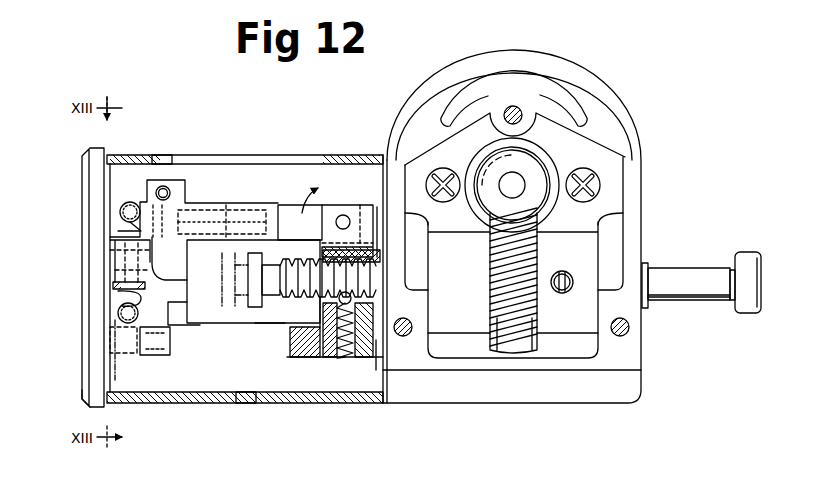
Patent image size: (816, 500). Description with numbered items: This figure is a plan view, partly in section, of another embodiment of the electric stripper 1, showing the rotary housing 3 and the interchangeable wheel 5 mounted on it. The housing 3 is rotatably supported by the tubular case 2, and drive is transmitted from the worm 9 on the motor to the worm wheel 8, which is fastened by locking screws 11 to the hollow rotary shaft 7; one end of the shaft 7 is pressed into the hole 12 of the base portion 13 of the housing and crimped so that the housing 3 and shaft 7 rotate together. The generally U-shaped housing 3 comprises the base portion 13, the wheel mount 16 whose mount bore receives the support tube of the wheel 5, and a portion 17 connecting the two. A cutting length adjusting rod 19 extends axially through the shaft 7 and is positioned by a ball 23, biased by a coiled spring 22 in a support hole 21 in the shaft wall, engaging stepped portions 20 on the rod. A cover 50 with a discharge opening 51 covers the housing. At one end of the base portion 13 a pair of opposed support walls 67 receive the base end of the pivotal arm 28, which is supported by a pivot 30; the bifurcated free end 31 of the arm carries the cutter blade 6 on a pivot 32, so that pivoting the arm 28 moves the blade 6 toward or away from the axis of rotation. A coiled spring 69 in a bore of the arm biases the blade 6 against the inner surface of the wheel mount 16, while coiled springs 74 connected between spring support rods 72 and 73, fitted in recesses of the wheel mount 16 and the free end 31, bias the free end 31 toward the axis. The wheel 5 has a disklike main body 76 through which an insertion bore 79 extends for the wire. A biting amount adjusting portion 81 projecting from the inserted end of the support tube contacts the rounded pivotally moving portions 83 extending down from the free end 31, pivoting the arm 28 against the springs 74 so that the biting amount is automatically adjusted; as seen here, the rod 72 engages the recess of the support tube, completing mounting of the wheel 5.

The electric stripper 1 is at (620, 70).
The case 2 is at (638, 133).
The rotary housing 3 is at (222, 362).
The interchangeable wheel 5 is at (78, 154).
The cutter blade 6 is at (130, 258).
The rotary shaft 7 is at (378, 299).
The worm wheel 8 is at (513, 337).
The worm 9 is at (523, 157).
The locking screws 11 is at (572, 292).
The hole 12 is at (372, 258).
The base portion 13 is at (380, 353).
The wheel mount 16 is at (147, 360).
The connecting portion 17 is at (268, 343).
The cutting length adjusting rod 19 is at (690, 281).
The stepped portions 20 is at (304, 357).
The support hole 21 is at (366, 360).
The coiled spring 22 is at (345, 360).
The ball 23 is at (325, 350).
The pivotal arm 28 is at (268, 205).
The pivot 30 is at (343, 215).
The free end 31 is at (182, 190).
The pivot 32 is at (166, 187).
The cover 50 is at (246, 396).
The opening 51 is at (162, 155).
The support walls 67 is at (366, 207).
The coiled spring 69 is at (227, 208).
The spring support rod 72 is at (121, 314).
The spring support rod 73 is at (121, 212).
The coiled springs 74 is at (117, 282).
The main body 76 is at (82, 375).
The insertion bore 79 is at (92, 289).
The biting amount adjusting portion 81 is at (187, 325).
The pivotally moving portion 83 is at (172, 262).